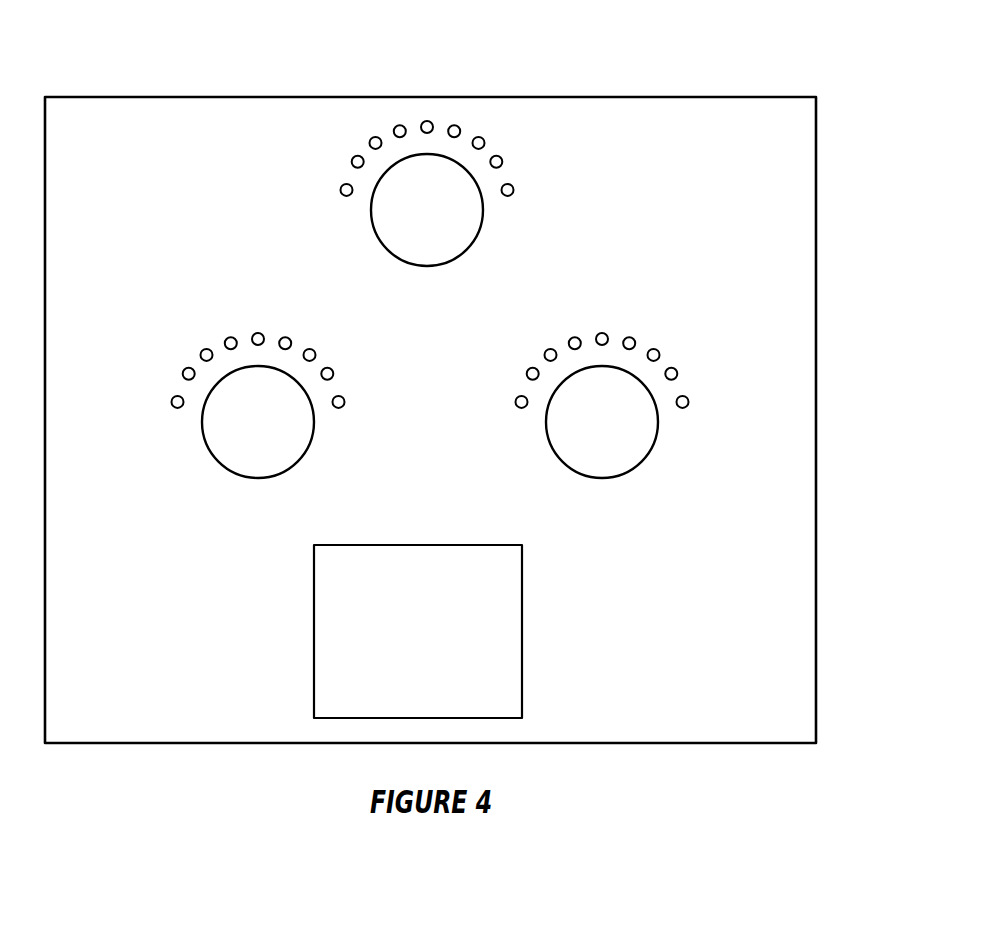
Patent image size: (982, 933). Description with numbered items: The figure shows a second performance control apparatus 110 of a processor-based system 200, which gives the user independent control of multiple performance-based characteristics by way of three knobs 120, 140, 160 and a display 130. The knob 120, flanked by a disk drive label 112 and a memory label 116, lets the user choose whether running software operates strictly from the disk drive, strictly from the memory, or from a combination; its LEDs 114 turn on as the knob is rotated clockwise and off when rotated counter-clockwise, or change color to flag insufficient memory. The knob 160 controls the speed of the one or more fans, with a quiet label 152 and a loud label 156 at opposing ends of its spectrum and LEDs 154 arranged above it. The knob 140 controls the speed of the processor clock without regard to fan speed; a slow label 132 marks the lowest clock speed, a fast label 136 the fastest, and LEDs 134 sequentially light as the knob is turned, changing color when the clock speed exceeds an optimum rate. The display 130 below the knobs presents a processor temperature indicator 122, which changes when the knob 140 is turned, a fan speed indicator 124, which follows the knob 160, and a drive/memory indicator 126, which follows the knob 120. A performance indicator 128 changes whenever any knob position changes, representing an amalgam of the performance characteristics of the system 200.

The processor-based system 200 is at (808, 42).
The performance control apparatus 110 is at (818, 245).
The disk drive label 112 is at (327, 207).
The LEDs 114 is at (497, 160).
The memory label 116 is at (545, 200).
The knob 120 is at (402, 257).
The quiet label 152 is at (157, 420).
The LEDs 154 is at (328, 372).
The loud label 156 is at (377, 412).
The knob 160 is at (232, 467).
The slow label 132 is at (498, 455).
The LEDs 134 is at (672, 372).
The fast label 136 is at (718, 410).
The knob 140 is at (630, 468).
The display 130 is at (522, 592).
The processor temperature indicator 122 is at (368, 580).
The fan speed indicator 124 is at (375, 618).
The drive/memory indicator 126 is at (360, 648).
The performance indicator 128 is at (357, 685).